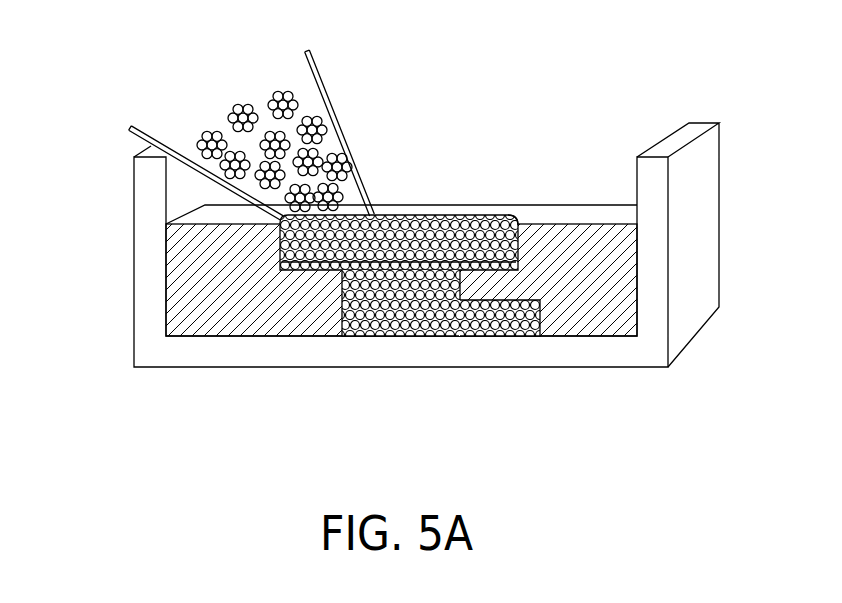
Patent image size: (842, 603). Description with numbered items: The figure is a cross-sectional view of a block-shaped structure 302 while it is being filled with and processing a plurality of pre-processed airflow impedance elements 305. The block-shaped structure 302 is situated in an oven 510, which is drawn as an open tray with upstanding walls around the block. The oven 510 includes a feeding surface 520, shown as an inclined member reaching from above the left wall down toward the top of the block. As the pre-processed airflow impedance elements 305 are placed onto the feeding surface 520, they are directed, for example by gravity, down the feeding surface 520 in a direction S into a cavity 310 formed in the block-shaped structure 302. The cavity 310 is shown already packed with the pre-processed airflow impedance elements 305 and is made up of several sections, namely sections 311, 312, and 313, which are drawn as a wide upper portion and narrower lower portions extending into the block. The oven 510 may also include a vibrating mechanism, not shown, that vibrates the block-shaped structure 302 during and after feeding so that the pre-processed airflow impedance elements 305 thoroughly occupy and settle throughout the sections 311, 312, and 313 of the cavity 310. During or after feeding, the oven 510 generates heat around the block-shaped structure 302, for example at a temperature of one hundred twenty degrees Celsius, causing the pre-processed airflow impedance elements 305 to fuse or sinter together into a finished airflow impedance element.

The direction S is at (183, 76).
The block-shaped structure 302 is at (240, 295).
The pre-processed airflow impedance elements 305 is at (315, 121).
The cavity 310 is at (510, 215).
The section of cavity 311 is at (542, 315).
The section of cavity 312 is at (460, 283).
The section of cavity 313 is at (512, 217).
The oven 510 is at (693, 258).
The feeding surface 520 is at (180, 120).